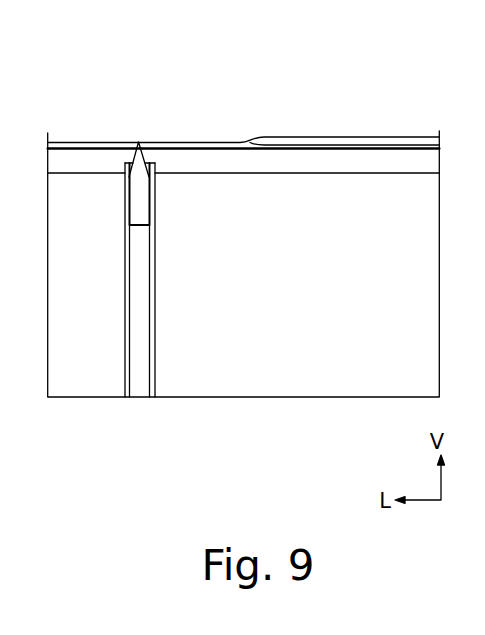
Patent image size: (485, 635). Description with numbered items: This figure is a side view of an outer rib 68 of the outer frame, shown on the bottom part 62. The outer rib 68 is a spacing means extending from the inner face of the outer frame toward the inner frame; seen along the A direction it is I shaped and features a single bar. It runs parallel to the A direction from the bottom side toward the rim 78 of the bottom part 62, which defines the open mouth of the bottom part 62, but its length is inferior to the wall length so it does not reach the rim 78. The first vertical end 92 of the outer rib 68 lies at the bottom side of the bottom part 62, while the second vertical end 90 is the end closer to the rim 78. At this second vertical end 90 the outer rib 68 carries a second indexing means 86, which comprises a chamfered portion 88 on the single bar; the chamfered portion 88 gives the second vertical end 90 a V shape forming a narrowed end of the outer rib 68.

The bottom part 62 is at (352, 398).
The outer rib 68 is at (138, 284).
The rim 78 is at (341, 144).
The second indexing means 86 is at (140, 140).
The chamfered portion 88 is at (128, 157).
The second vertical end 90 is at (158, 177).
The first vertical end 92 is at (143, 398).